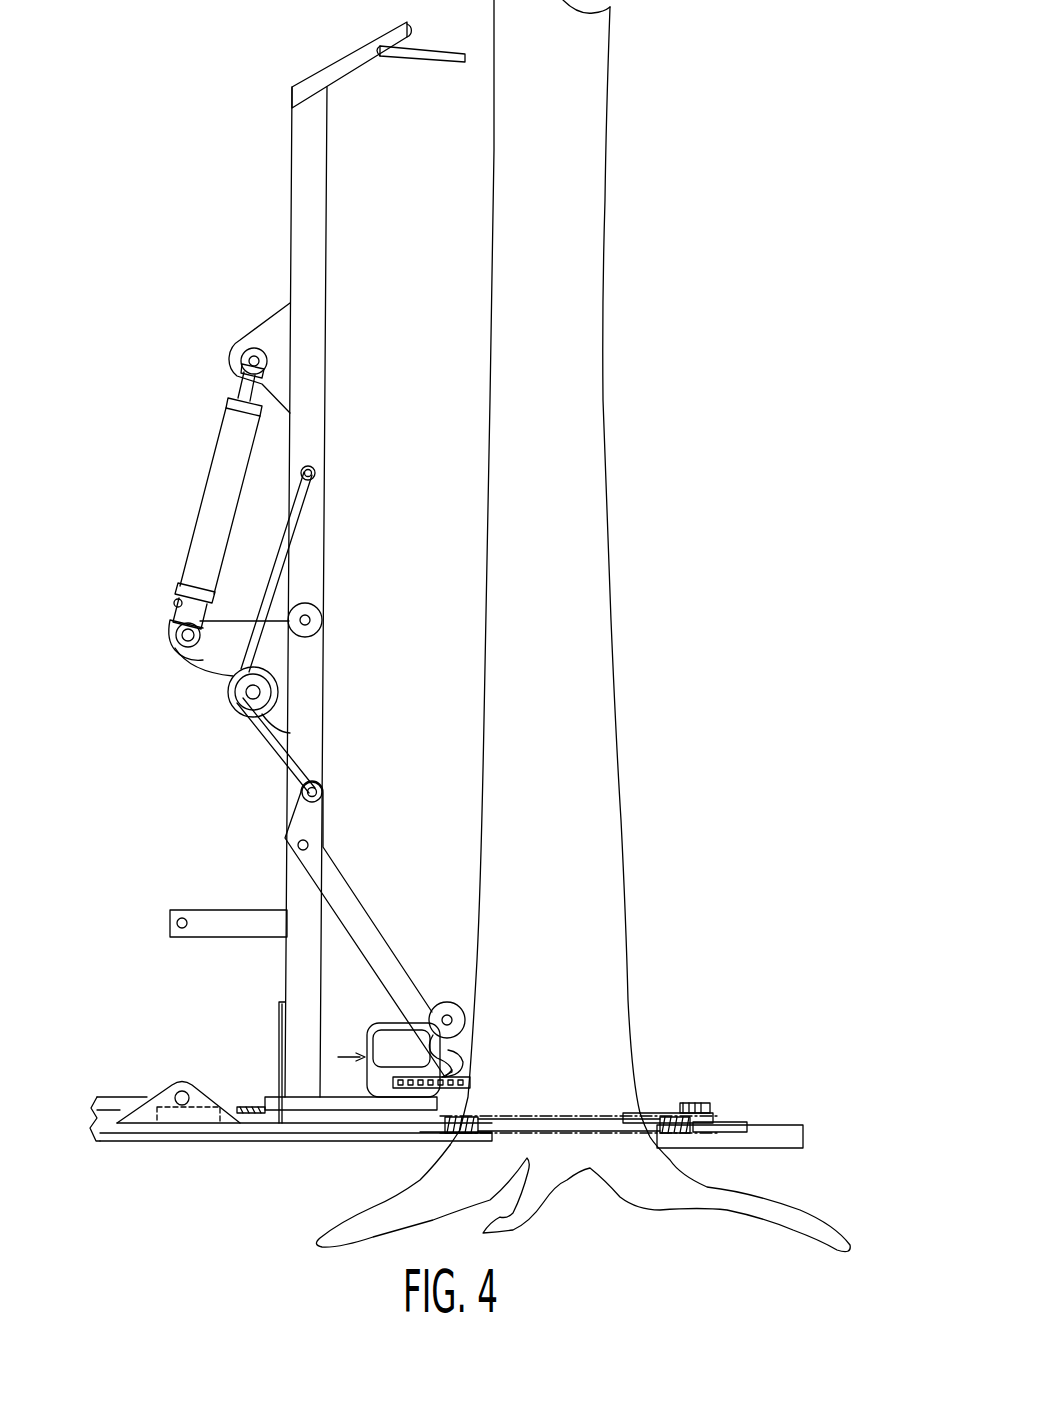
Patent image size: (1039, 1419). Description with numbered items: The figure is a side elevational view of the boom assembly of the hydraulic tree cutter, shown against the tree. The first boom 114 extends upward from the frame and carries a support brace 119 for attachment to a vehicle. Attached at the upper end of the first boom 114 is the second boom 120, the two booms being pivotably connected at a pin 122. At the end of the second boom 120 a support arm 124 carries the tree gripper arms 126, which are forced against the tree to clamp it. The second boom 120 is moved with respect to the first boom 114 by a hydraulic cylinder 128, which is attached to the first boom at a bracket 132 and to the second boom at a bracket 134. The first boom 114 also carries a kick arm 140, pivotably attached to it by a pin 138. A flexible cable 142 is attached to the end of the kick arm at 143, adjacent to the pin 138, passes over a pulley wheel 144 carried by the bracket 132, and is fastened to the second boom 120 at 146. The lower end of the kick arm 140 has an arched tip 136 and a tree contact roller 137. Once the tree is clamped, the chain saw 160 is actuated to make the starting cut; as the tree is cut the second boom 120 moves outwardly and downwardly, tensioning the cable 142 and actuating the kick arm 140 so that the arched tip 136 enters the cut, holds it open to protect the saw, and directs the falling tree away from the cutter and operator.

The first boom 114 is at (300, 990).
The support brace 119 is at (200, 912).
The second boom 120 is at (307, 187).
The pin 122 is at (310, 616).
The support arm 124 is at (367, 52).
The tree gripper arms 126 is at (443, 60).
The hydraulic cylinder 128 is at (220, 470).
The bracket 132 is at (203, 660).
The bracket 134 is at (276, 330).
The arched tip 136 is at (455, 1072).
The tree contact roller 137 is at (445, 1001).
The pin 138 is at (296, 840).
The kick arm 140 is at (333, 883).
The flexible cable 142 is at (302, 505).
The kick arm cable attachment point 143 is at (325, 795).
The pulley wheel 144 is at (243, 700).
The cable attachment point on second boom 146 is at (316, 478).
The chain saw 160 is at (385, 1092).